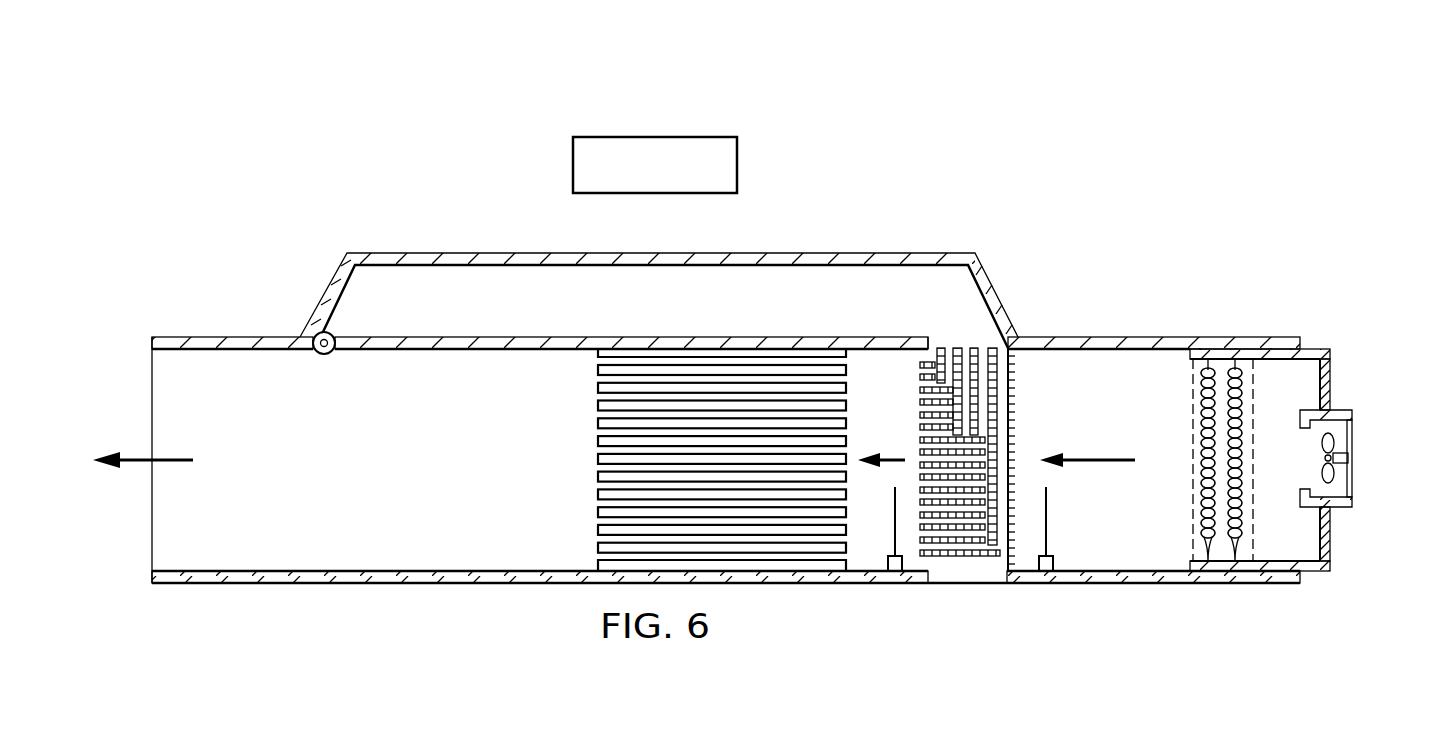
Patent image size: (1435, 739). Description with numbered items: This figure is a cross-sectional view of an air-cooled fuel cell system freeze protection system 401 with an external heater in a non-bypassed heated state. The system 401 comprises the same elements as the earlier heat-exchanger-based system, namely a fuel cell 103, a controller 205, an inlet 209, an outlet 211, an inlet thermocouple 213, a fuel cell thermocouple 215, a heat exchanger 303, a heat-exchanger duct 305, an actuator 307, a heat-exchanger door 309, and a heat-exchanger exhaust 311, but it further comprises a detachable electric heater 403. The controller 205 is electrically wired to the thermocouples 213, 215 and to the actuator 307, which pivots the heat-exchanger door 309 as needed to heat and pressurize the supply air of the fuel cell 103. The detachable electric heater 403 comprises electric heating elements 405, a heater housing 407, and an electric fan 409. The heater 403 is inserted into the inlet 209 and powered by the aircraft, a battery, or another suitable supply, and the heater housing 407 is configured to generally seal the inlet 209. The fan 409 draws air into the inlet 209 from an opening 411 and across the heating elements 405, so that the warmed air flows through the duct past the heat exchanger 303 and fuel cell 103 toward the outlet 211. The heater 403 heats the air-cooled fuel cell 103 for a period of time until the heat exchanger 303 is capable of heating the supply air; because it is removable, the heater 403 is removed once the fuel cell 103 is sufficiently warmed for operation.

The air-cooled fuel cell system freeze protection system 401 is at (226, 91).
The controller 205 is at (573, 165).
The heat-exchanger duct 305 is at (405, 253).
The heat-exchanger door 309 is at (470, 340).
The actuator 307 is at (324, 353).
The outlet 211 is at (128, 392).
The fuel cell 103 is at (598, 437).
The heat exchanger 303 is at (1010, 395).
The heat-exchanger exhaust 311 is at (967, 582).
The fuel cell thermocouple 215 is at (886, 566).
The inlet thermocouple 213 is at (1052, 562).
The inlet 209 is at (1170, 487).
The electric heating elements 405 is at (1193, 412).
The detachable electric heater 403 is at (1313, 340).
The heater housing 407 is at (1330, 390).
The electric fan 409 is at (1345, 432).
The opening 411 is at (1348, 484).